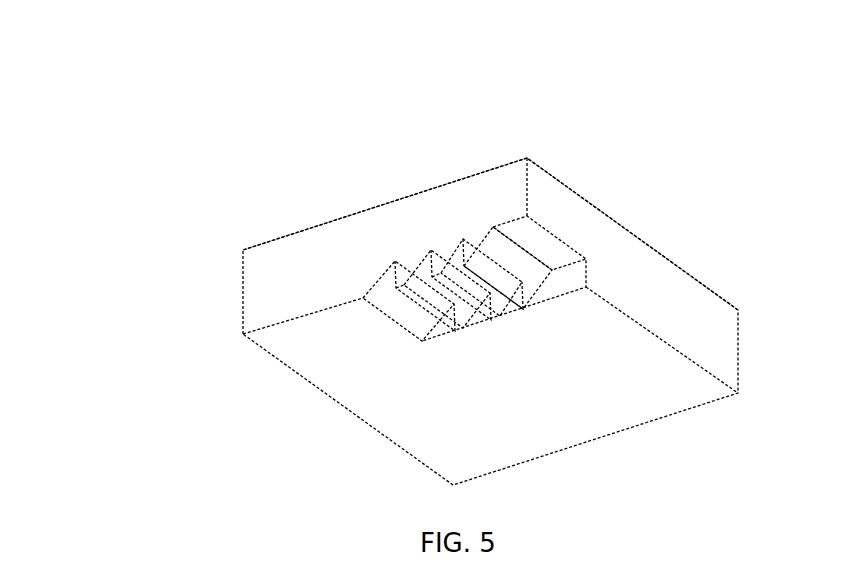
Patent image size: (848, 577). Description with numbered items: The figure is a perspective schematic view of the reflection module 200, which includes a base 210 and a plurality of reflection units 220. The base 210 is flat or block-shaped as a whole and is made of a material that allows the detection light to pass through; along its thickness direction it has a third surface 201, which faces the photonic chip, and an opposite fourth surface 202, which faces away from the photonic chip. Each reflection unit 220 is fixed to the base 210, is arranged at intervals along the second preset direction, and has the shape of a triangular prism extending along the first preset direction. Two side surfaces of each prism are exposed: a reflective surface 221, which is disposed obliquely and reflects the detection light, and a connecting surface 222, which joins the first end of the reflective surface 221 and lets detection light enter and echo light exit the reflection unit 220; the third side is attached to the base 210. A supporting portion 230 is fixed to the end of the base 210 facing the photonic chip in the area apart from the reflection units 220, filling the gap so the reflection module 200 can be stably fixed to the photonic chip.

The reflection module 200 is at (100, 48).
The base 210 is at (628, 108).
The third surface 201 is at (535, 236).
The fourth surface 202 is at (534, 163).
The reflection unit 220 is at (473, 238).
The reflective surface 221 is at (430, 251).
The connecting surface 222 is at (393, 263).
The supporting portion 230 is at (308, 307).